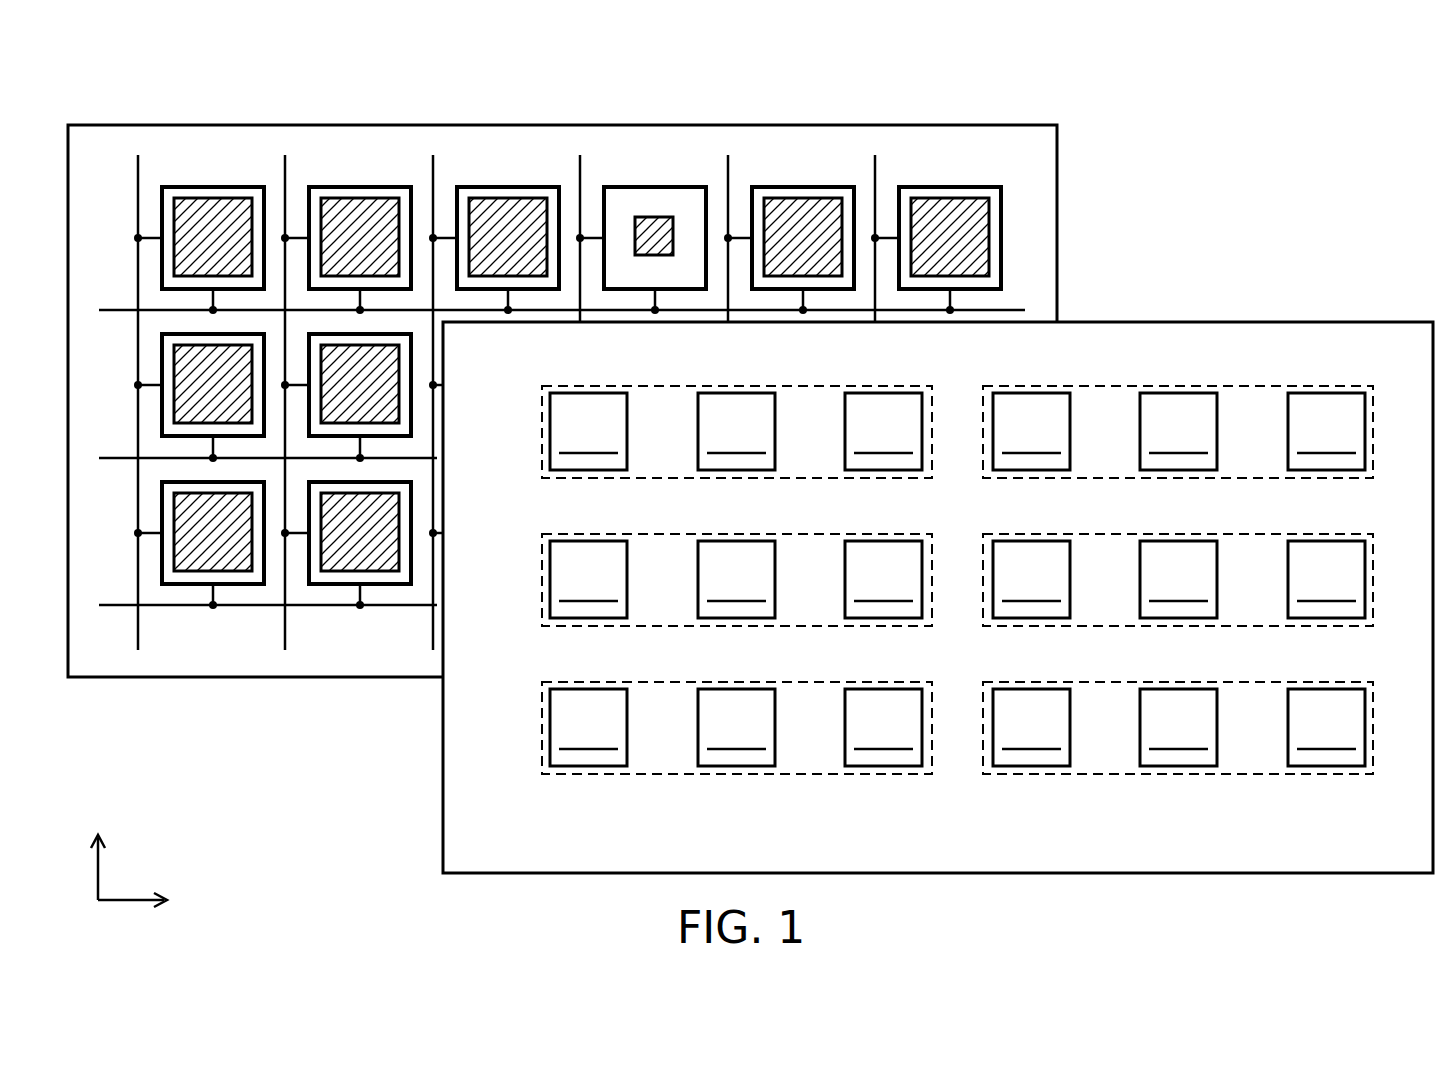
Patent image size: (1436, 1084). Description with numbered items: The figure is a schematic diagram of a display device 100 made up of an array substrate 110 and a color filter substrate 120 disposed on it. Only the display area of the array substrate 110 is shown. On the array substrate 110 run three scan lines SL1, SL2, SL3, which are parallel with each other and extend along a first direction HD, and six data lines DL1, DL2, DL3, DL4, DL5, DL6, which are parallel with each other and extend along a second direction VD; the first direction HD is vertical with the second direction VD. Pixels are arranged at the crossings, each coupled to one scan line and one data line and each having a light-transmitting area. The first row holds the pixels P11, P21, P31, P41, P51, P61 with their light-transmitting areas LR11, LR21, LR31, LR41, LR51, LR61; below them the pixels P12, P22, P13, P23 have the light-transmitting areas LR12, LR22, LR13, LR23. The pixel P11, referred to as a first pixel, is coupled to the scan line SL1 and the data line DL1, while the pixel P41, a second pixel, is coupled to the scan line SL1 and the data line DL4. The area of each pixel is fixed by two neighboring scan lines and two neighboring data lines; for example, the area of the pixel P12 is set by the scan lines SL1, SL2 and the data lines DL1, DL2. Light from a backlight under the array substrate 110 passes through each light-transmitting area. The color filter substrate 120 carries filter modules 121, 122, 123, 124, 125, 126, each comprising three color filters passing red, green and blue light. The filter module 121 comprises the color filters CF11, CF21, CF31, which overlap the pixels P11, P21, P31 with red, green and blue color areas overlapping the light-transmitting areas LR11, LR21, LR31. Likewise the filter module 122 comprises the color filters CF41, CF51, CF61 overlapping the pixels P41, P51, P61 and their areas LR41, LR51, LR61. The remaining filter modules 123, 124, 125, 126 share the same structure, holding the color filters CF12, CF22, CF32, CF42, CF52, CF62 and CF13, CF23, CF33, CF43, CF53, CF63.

The display device 100 is at (1416, 89).
The array substrate 110 is at (1057, 155).
The color filter substrate 120 is at (1326, 322).
The filter module 121 is at (545, 392).
The filter module 122 is at (986, 392).
The filter module 123 is at (545, 540).
The filter module 124 is at (986, 540).
The filter module 125 is at (545, 688).
The filter module 126 is at (986, 688).
The data line DL1 is at (139, 172).
The data line DL2 is at (286, 172).
The data line DL3 is at (434, 172).
The data line DL4 is at (581, 172).
The data line DL5 is at (729, 172).
The data line DL6 is at (876, 172).
The scan line SL1 is at (120, 310).
The scan line SL2 is at (120, 458).
The scan line SL3 is at (120, 605).
The pixel P11 is at (183, 187).
The pixel P21 is at (330, 187).
The pixel P31 is at (478, 187).
The pixel P41 is at (625, 187).
The pixel P51 is at (773, 187).
The pixel P61 is at (920, 187).
The pixel P12 is at (162, 342).
The pixel P22 is at (412, 345).
The pixel P13 is at (162, 490).
The pixel P23 is at (412, 493).
The light-transmitting area LR11 is at (228, 198).
The light-transmitting area LR21 is at (375, 198).
The light-transmitting area LR31 is at (523, 198).
The light-transmitting area LR41 is at (655, 217).
The light-transmitting area LR51 is at (818, 198).
The light-transmitting area LR61 is at (965, 198).
The light-transmitting area LR12 is at (245, 424).
The light-transmitting area LR22 is at (327, 424).
The light-transmitting area LR13 is at (190, 571).
The light-transmitting area LR23 is at (388, 571).
The color filter CF11 is at (622, 393).
The color filter CF21 is at (735, 393).
The color filter CF31 is at (858, 393).
The color filter CF41 is at (1066, 393).
The color filter CF51 is at (1178, 393).
The color filter CF61 is at (1303, 393).
The color filter CF12 is at (627, 612).
The color filter CF22 is at (775, 612).
The color filter CF32 is at (922, 612).
The color filter CF42 is at (1070, 612).
The color filter CF52 is at (1217, 612).
The color filter CF62 is at (1365, 612).
The color filter CF13 is at (562, 766).
The color filter CF23 is at (710, 766).
The color filter CF33 is at (857, 766).
The color filter CF43 is at (1005, 766).
The color filter CF53 is at (1152, 766).
The color filter CF63 is at (1300, 766).
The second direction VD is at (97, 846).
The first direction HD is at (159, 901).